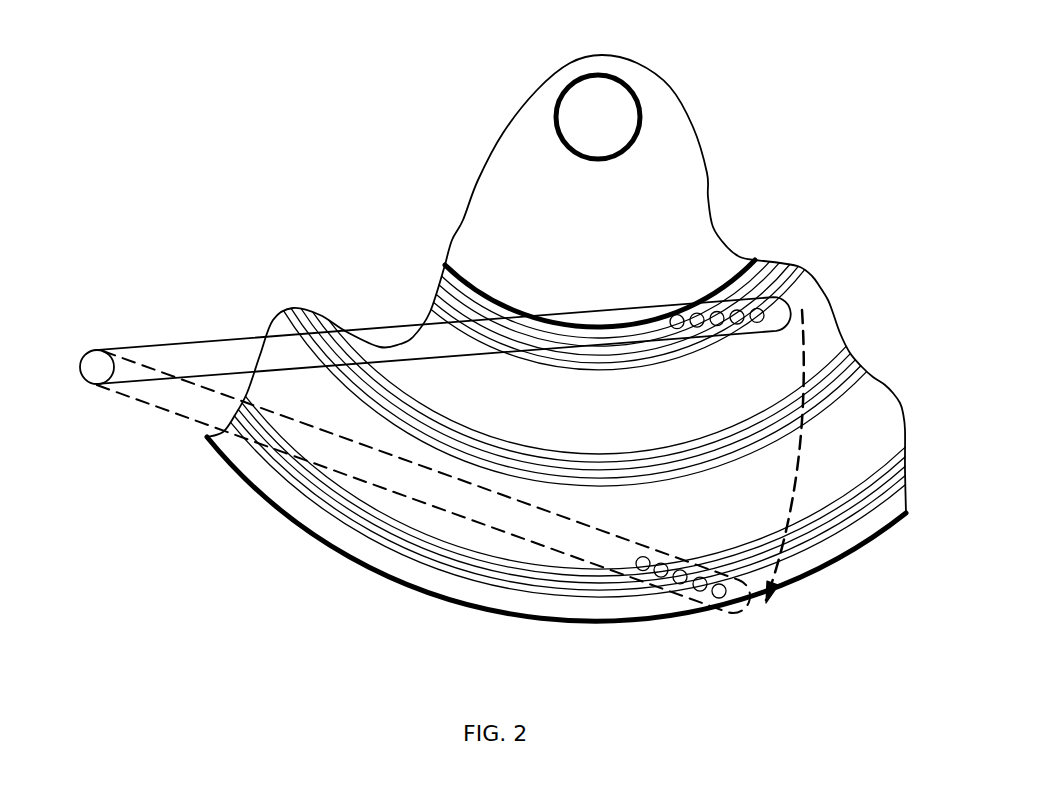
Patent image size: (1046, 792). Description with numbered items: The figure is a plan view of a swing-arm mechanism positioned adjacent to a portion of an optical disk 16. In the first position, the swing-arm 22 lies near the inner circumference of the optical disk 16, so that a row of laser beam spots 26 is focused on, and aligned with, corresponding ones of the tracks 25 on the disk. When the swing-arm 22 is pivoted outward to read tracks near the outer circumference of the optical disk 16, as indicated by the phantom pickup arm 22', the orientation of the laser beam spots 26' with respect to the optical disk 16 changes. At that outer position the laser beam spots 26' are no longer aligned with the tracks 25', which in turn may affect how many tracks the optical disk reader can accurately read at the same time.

The optical disk 16 is at (473, 178).
The swing-arm 22 is at (435, 332).
The phantom pickup arm 22' is at (420, 482).
The tracks 25 is at (619, 299).
The tracks 25' is at (592, 496).
The laser beam spots 26 is at (698, 282).
The laser beam spots 26' is at (681, 612).